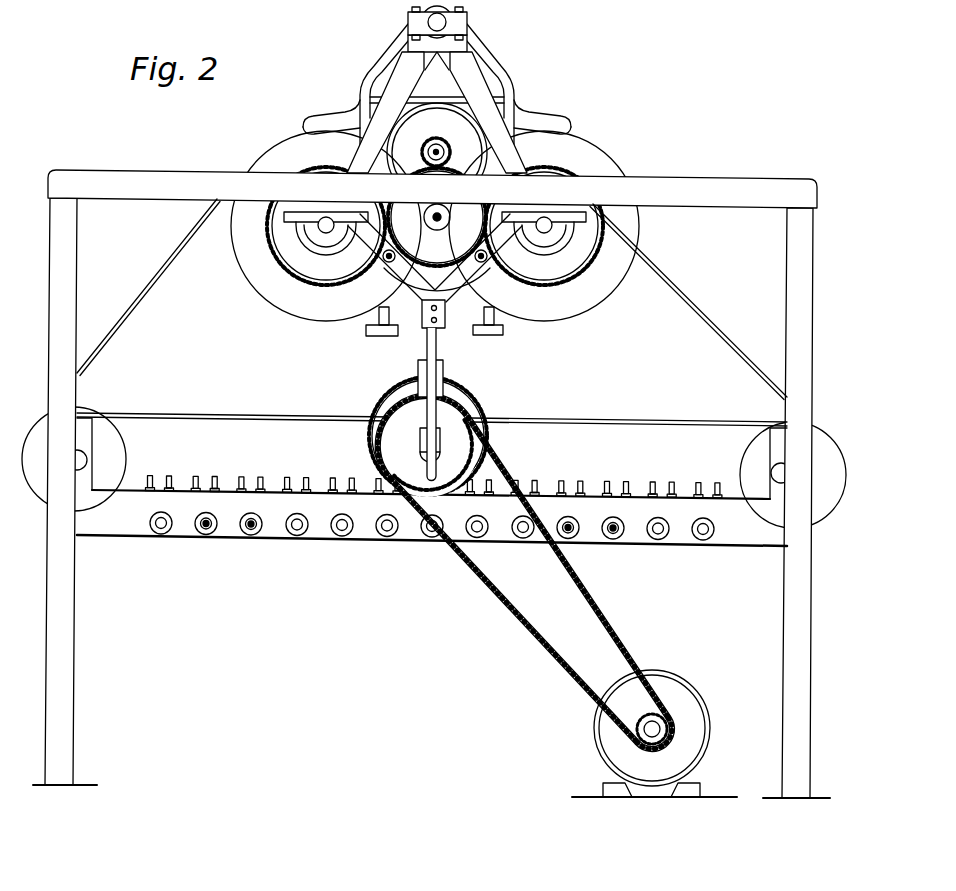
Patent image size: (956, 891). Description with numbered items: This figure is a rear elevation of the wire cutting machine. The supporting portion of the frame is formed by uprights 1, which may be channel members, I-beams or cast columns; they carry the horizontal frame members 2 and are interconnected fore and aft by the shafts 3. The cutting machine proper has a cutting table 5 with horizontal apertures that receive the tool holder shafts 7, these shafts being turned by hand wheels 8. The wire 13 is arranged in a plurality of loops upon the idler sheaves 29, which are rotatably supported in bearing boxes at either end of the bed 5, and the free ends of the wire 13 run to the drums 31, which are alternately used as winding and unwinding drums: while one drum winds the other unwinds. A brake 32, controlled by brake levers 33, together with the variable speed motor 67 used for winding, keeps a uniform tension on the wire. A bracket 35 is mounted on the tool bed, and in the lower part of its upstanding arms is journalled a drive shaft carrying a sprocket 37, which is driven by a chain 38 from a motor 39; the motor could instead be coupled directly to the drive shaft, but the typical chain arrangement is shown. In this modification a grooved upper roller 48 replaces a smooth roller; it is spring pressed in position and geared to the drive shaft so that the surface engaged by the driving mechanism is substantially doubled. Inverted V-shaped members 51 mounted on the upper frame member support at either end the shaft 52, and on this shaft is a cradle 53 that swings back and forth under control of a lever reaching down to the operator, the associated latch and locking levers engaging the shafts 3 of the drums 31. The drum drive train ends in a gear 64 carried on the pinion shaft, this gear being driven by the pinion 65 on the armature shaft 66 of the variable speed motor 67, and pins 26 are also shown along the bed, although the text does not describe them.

The uprights 1 is at (810, 258).
The horizontal frame members 2 is at (726, 168).
The shafts 3 is at (325, 219).
The cutting table 5 is at (117, 528).
The tool holder shafts 7 is at (166, 532).
The hand wheels 8 is at (206, 534).
The wire 13 is at (132, 297).
The pin 26 is at (214, 474).
The idler sheaves 29 is at (112, 425).
The drums 31 is at (288, 150).
The brake 32 is at (333, 115).
The brake levers 33 is at (366, 333).
The bracket 35 is at (446, 363).
The sprocket 37 is at (466, 436).
The chain 38 is at (583, 587).
The motor 39 is at (677, 690).
The grooved upper roller 48 is at (450, 388).
The inverted V-shaped members 51 is at (405, 80).
The shaft 52 is at (442, 20).
The cradle 53 is at (500, 62).
The gear 64 is at (437, 229).
The pinion 65 is at (431, 143).
The armature shaft 66 is at (428, 152).
The variable speed motor 67 is at (445, 133).